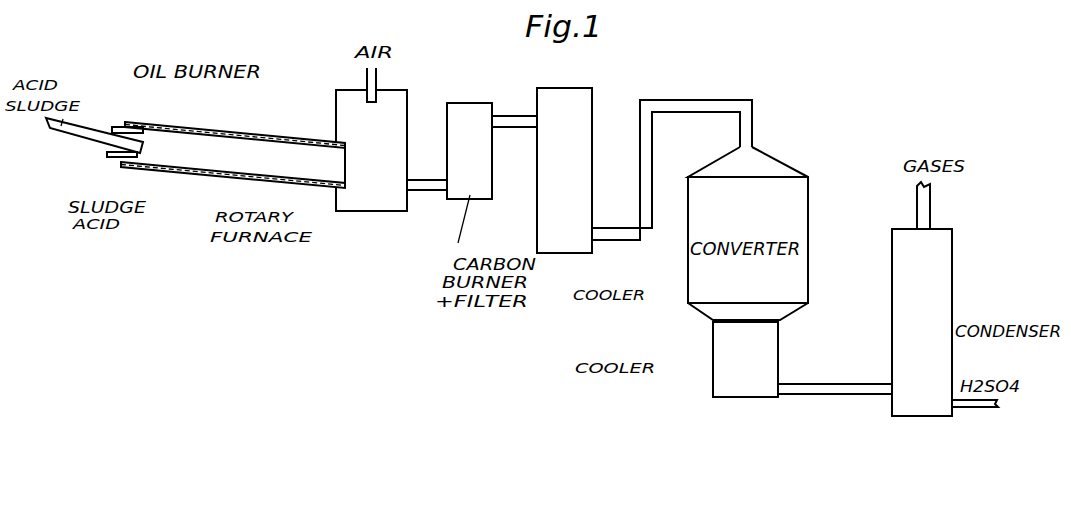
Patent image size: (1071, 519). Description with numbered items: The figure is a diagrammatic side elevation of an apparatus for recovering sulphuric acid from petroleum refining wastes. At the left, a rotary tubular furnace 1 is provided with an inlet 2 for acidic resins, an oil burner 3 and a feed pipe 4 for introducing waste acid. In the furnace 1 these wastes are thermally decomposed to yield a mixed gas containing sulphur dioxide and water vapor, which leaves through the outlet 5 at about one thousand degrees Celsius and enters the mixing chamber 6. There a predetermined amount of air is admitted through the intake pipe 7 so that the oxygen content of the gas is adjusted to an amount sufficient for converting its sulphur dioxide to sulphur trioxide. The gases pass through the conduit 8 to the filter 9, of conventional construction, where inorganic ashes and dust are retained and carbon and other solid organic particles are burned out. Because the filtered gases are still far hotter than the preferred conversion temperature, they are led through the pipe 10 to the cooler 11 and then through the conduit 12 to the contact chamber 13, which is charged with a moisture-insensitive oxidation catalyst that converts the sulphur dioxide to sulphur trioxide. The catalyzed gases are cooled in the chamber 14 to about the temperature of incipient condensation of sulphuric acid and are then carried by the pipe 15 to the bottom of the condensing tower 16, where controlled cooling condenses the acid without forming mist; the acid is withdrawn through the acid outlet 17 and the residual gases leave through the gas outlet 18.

The rotary tubular furnace 1 is at (228, 158).
The inlet 2 is at (75, 128).
The oil burner 3 is at (115, 127).
The feed pipe 4 is at (111, 157).
The outlet 5 is at (345, 171).
The mixing chamber 6 is at (388, 202).
The intake pipe 7 is at (373, 103).
The conduit 8 is at (436, 190).
The filter 9 is at (483, 172).
The pipe 10 is at (515, 116).
The cooler 11 is at (572, 240).
The conduit 12 is at (696, 99).
The contact chamber 13 is at (808, 228).
The chamber 14 is at (713, 361).
The pipe 15 is at (850, 395).
The condensing tower 16 is at (952, 312).
The acid outlet 17 is at (988, 406).
The gas outlet 18 is at (930, 210).